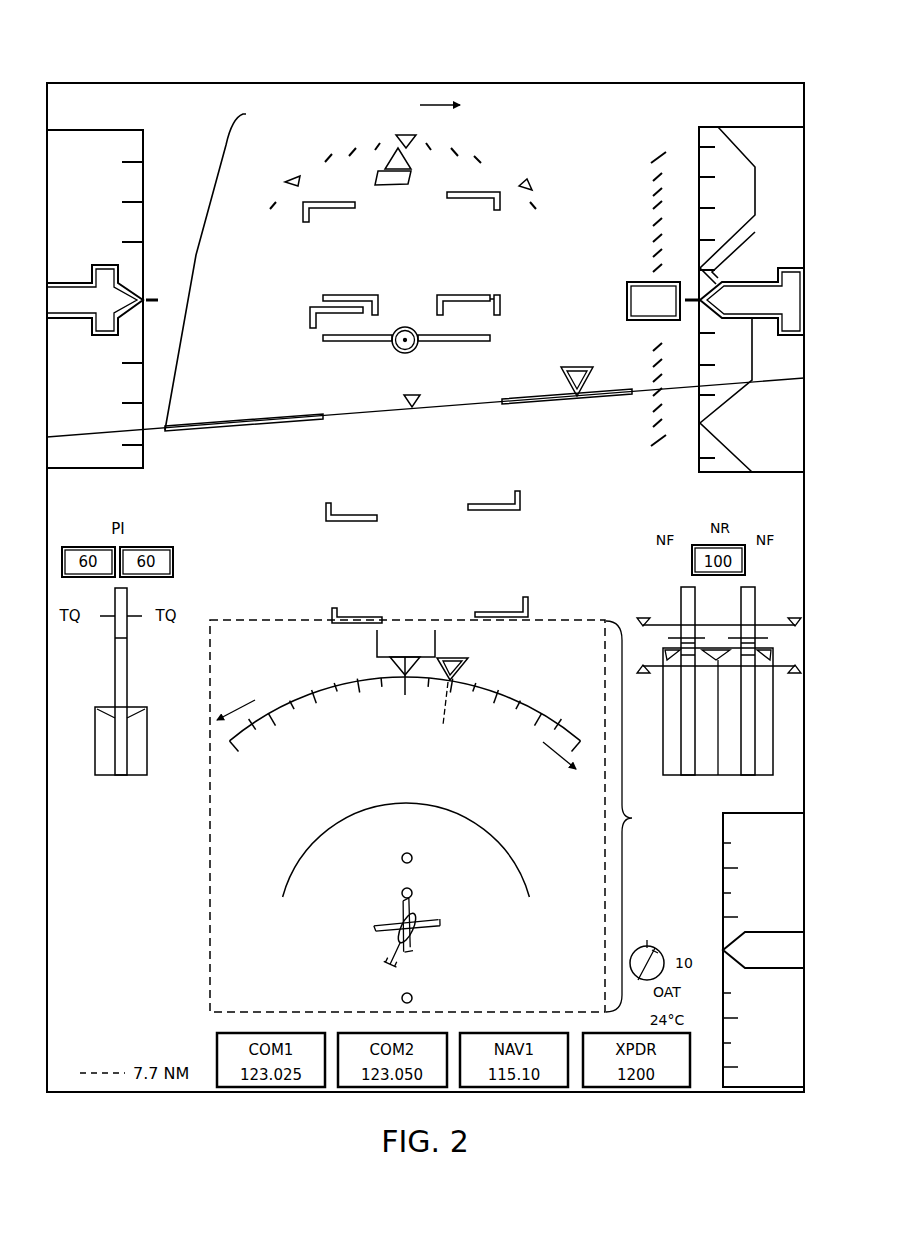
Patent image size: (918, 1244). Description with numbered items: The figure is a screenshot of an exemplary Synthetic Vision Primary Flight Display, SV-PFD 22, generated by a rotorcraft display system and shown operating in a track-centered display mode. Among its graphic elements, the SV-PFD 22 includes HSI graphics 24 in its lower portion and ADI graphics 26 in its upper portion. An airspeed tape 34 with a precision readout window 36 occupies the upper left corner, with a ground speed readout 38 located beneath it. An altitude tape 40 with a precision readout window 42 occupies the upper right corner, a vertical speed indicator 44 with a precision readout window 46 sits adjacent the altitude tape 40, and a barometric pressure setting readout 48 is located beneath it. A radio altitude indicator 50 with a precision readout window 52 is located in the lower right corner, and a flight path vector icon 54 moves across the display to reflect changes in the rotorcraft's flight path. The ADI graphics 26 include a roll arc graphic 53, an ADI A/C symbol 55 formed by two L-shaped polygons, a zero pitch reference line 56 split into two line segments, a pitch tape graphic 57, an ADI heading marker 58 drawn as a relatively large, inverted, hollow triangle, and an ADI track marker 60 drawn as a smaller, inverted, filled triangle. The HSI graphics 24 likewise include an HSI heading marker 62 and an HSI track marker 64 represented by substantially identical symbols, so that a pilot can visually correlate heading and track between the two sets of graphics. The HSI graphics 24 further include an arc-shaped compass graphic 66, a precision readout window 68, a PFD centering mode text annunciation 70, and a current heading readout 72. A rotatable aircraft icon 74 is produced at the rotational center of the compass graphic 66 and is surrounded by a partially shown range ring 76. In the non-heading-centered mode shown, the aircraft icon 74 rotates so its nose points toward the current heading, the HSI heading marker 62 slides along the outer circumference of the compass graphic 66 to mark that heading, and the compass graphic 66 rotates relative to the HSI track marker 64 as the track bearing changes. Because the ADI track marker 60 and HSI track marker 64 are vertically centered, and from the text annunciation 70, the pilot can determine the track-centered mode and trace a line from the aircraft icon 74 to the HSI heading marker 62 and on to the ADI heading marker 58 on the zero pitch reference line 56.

The Synthetic Vision Primary Flight Display 22 is at (65, 86).
The HSI graphics 24 is at (424, 816).
The ADI graphics 26 is at (197, 252).
The airspeed tape 34 is at (121, 136).
The precision readout window 36 is at (60, 304).
The ground speed readout 38 is at (124, 490).
The altitude tape 40 is at (796, 166).
The precision readout window 42 is at (806, 303).
The vertical speed indicator 44 is at (652, 222).
The precision readout window 46 is at (626, 300).
The barometric pressure setting readout 48 is at (792, 494).
The radio altitude indicator 50 is at (792, 857).
The precision readout window 52 is at (806, 946).
The roll arc graphic 53 is at (527, 182).
The flight path vector icon 54 is at (406, 325).
The ADI A/C symbol 55 is at (355, 293).
The zero pitch reference line 56 is at (280, 420).
The pitch tape graphic 57 is at (470, 204).
The ADI heading marker 58 is at (576, 364).
The ADI track marker 60 is at (400, 394).
The HSI heading marker 62 is at (470, 666).
The HSI track marker 64 is at (395, 680).
The compass graphic 66 is at (300, 699).
The precision readout window 68 is at (412, 628).
The PFD centering mode text annunciation 70 is at (336, 646).
The current heading readout 72 is at (580, 622).
The rotatable aircraft icon 74 is at (385, 935).
The range ring 76 is at (415, 802).